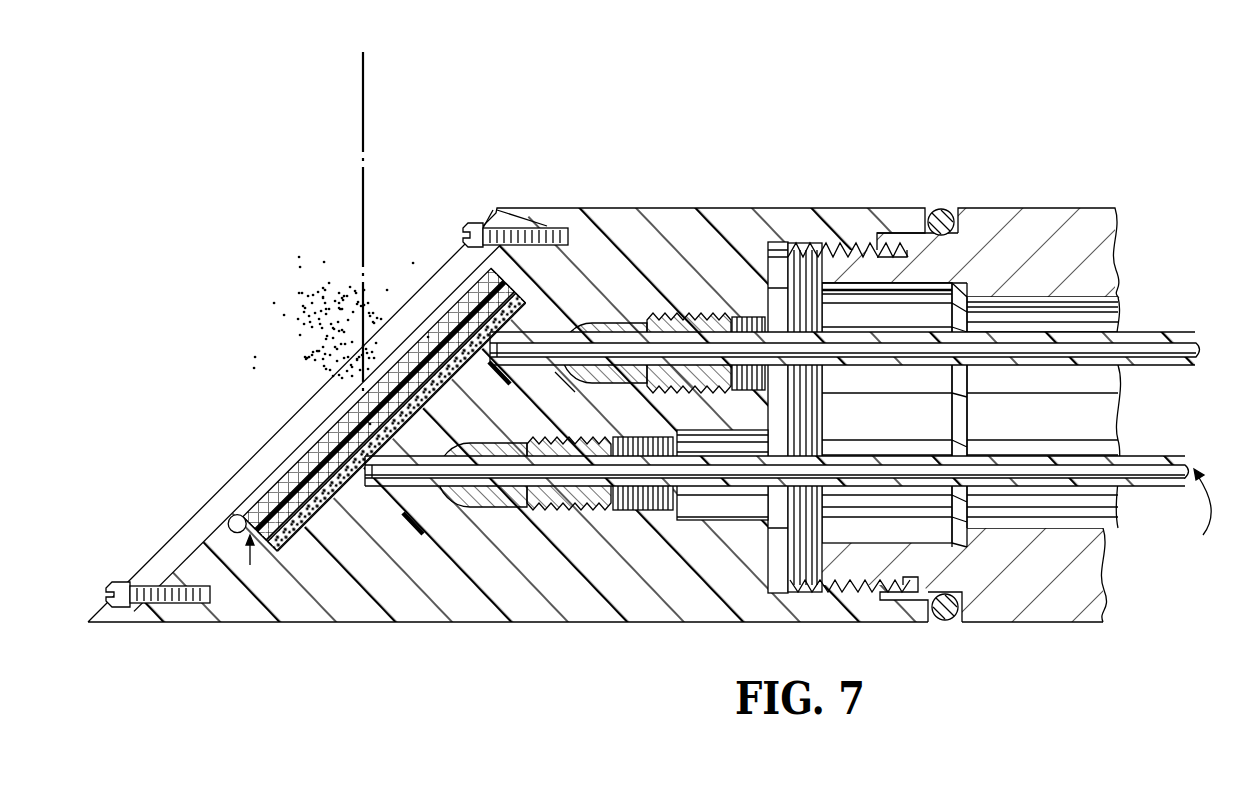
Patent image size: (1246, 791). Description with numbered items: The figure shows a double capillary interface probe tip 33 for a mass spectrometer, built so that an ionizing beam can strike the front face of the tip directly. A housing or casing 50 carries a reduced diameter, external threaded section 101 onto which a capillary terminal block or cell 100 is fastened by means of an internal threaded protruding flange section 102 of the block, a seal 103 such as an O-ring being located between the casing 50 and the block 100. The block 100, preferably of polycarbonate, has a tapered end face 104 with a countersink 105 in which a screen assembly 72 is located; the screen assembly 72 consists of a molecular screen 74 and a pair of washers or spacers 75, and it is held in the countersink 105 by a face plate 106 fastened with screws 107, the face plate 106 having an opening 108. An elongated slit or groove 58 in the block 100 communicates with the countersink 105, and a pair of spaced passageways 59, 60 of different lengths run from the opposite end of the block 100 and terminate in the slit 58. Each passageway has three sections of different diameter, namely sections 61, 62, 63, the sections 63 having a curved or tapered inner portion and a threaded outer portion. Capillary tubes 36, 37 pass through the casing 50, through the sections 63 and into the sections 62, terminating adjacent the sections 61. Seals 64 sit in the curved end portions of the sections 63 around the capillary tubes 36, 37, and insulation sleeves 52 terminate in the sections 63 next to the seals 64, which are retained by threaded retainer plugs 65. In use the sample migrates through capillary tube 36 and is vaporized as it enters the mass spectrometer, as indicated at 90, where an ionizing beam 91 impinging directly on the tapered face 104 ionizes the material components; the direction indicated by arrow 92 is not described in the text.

The probe tip 33 is at (1084, 140).
The capillary tube 36 is at (1188, 332).
The capillary tube 37 is at (1158, 486).
The housing or casing 50 is at (1090, 205).
The insulation sleeves 52 is at (1130, 450).
The elongated slit, groove or countersink 58 is at (305, 444).
The passageway 59 is at (572, 307).
The passageway 60 is at (430, 503).
The passageway section 61 is at (362, 468).
The passageway section 62 is at (495, 365).
The passageway section 63 is at (556, 374).
The seals 64 is at (637, 323).
The threaded retainer plugs 65 is at (605, 440).
The screen assembly 72 is at (265, 568).
The molecular screen 74 is at (228, 512).
The washers or spacers 75 is at (462, 272).
The vaporized sample material 90 is at (226, 312).
The ionizing beam 91 is at (364, 125).
The direction arrow 92 is at (1214, 514).
The capillary terminal block 100 is at (760, 208).
The external threaded section 101 is at (860, 258).
The internal threaded protruding flange section 102 is at (868, 222).
The seal 103 is at (950, 212).
The tapered end face 104 is at (216, 545).
The countersink 105 is at (266, 496).
The face plate 106 is at (175, 545).
The screws 107 is at (466, 222).
The opening 108 is at (1105, 515).